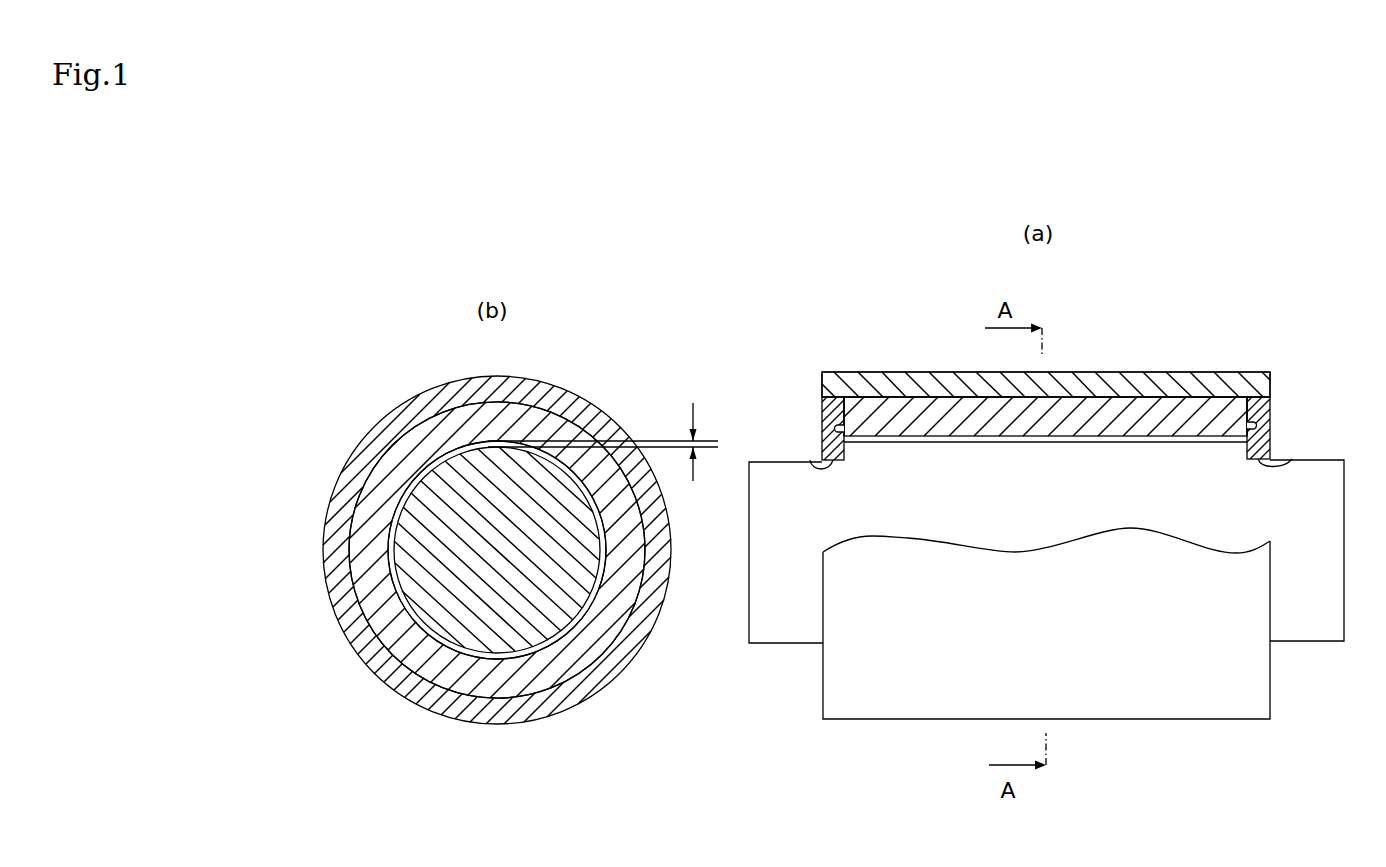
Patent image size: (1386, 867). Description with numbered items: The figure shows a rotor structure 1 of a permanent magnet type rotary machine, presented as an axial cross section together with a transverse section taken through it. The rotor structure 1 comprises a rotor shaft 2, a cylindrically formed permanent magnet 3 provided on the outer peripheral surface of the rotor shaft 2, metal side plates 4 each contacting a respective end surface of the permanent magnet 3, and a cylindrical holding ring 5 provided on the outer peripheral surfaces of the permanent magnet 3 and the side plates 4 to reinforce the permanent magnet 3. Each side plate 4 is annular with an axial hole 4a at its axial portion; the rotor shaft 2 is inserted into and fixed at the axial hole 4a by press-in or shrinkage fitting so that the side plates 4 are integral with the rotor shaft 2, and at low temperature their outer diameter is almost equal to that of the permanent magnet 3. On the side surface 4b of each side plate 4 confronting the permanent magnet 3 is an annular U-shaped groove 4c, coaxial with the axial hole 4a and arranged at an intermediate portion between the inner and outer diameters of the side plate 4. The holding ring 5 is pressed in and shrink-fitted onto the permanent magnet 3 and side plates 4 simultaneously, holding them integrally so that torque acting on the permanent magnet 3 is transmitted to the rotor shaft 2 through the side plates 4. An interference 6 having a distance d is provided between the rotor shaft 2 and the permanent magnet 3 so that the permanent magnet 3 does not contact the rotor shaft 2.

The rotor structure 1 is at (1138, 333).
The rotor shaft 2 is at (430, 601).
The permanent magnet 3 is at (370, 532).
The side plate 4 is at (822, 430).
The axial hole 4a is at (810, 460).
The side surface 4b is at (852, 412).
The U-shaped groove 4c is at (834, 428).
The holding ring 5 is at (340, 584).
The interference 6 is at (410, 487).